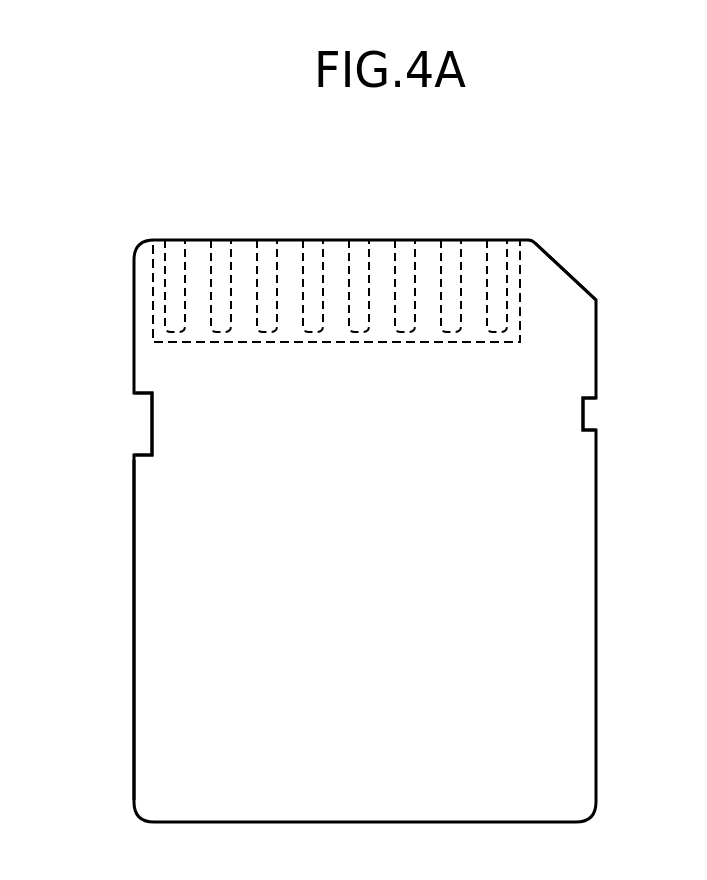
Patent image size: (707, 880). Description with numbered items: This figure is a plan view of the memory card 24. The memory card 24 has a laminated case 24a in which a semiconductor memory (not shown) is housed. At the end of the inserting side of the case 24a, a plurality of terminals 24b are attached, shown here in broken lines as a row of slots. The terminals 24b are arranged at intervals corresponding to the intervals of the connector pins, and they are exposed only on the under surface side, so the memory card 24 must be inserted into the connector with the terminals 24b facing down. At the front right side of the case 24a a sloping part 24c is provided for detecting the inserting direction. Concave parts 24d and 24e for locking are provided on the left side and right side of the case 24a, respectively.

The memory card 24 is at (447, 193).
The case 24a is at (150, 583).
The terminals 24b is at (310, 240).
The sloping part 24c is at (563, 264).
The concave part 24d is at (150, 433).
The concave part 24e is at (585, 413).